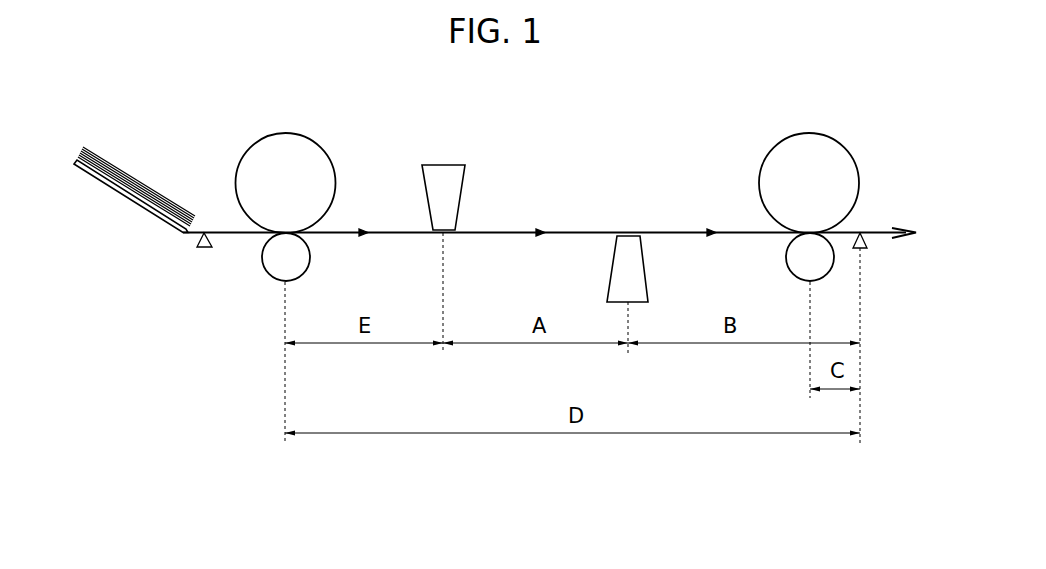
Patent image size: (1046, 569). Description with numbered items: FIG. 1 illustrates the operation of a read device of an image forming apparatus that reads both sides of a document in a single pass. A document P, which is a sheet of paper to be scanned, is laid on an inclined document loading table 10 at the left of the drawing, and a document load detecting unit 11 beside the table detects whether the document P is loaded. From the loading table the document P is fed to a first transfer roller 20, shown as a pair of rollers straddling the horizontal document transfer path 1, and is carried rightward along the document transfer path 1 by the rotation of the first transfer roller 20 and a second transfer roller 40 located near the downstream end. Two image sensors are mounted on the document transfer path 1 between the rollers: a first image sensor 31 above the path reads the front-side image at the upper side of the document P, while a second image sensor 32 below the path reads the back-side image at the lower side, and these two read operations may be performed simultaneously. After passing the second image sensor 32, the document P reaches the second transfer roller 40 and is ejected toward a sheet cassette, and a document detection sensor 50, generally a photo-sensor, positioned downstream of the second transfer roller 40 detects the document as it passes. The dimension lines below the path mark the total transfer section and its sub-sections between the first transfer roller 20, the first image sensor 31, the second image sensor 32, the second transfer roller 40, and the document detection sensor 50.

The document transfer path 1 is at (588, 230).
The document loading table 10 is at (128, 198).
The document load detecting unit 11 is at (197, 239).
The first transfer roller 20 is at (312, 135).
The first image sensor 31 is at (442, 163).
The second image sensor 32 is at (642, 268).
The second transfer roller 40 is at (835, 140).
The document detection sensor 50 is at (867, 240).
The document P is at (132, 177).